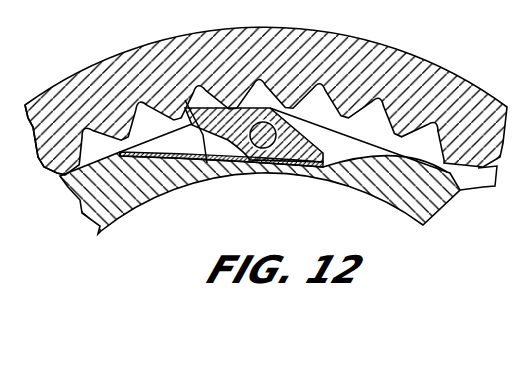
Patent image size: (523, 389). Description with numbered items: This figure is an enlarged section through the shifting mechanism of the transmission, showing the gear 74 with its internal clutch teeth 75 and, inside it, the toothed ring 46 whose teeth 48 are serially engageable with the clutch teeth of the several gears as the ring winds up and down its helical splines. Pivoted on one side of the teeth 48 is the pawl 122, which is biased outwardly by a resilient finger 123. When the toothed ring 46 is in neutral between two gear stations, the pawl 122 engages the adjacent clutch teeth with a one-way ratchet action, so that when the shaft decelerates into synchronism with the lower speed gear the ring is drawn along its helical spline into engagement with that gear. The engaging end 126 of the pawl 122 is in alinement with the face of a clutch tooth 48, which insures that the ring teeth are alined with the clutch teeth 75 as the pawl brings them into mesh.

The gear 74 is at (98, 66).
The internal clutch teeth 75 is at (60, 170).
The toothed ring 46 is at (100, 223).
The teeth 48 is at (477, 170).
The pawl 122 is at (252, 162).
The resilient finger 123 is at (207, 163).
The engaging end 126 is at (203, 168).